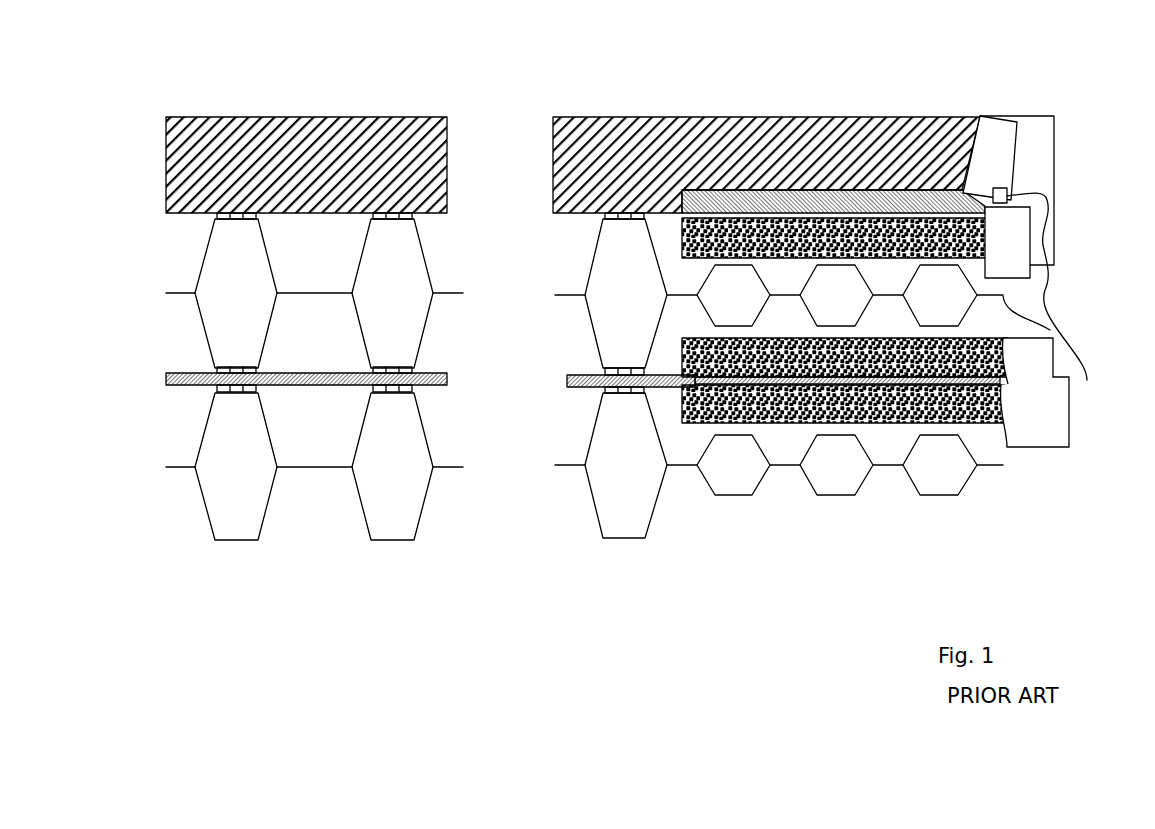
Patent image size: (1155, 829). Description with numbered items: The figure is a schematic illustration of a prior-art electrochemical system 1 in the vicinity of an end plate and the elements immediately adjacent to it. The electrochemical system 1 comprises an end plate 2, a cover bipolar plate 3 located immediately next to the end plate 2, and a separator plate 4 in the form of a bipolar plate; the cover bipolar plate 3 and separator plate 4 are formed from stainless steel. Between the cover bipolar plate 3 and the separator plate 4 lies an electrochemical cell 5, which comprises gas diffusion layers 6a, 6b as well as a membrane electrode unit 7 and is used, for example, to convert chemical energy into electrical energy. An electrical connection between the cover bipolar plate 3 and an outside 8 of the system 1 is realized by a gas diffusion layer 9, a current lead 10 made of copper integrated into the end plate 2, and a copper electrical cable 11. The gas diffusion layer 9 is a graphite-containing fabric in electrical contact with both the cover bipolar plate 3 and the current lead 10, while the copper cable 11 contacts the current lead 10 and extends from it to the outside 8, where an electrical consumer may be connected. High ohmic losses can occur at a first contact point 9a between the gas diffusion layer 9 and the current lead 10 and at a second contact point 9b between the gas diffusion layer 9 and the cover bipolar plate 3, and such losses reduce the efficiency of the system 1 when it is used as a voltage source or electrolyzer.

The electrochemical system 1 is at (985, 70).
The end plate 2 is at (230, 117).
The cover bipolar plate 3 is at (176, 298).
The separator plate 4 is at (177, 470).
The electrochemical cell 5 is at (1047, 396).
The gas diffusion layer 6a is at (958, 363).
The gas diffusion layer 6b is at (998, 410).
The membrane electrode unit 7 is at (998, 377).
The outside of the system 8 is at (590, 72).
The gas diffusion layer 9 is at (980, 227).
The first contact point 9a is at (898, 210).
The second contact point 9b is at (1049, 294).
The current lead 10 is at (975, 192).
The electrical cable 11 is at (1048, 228).